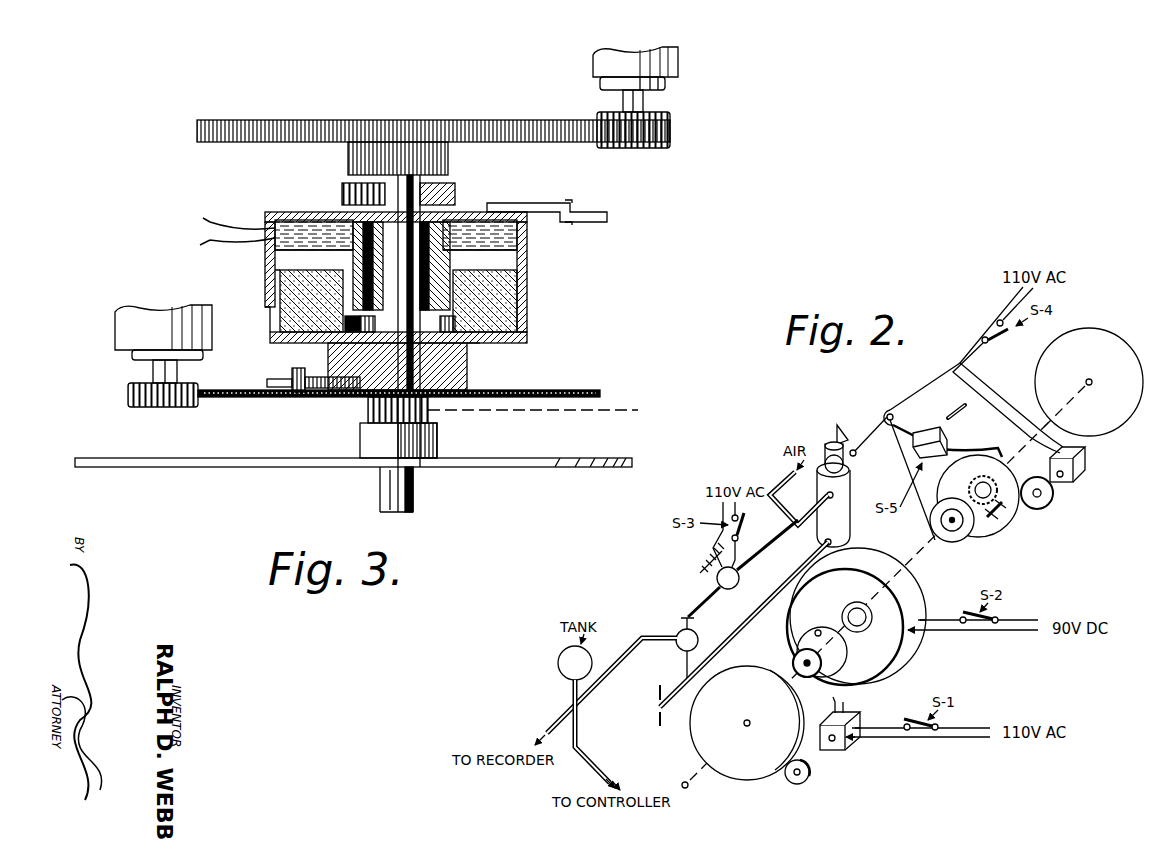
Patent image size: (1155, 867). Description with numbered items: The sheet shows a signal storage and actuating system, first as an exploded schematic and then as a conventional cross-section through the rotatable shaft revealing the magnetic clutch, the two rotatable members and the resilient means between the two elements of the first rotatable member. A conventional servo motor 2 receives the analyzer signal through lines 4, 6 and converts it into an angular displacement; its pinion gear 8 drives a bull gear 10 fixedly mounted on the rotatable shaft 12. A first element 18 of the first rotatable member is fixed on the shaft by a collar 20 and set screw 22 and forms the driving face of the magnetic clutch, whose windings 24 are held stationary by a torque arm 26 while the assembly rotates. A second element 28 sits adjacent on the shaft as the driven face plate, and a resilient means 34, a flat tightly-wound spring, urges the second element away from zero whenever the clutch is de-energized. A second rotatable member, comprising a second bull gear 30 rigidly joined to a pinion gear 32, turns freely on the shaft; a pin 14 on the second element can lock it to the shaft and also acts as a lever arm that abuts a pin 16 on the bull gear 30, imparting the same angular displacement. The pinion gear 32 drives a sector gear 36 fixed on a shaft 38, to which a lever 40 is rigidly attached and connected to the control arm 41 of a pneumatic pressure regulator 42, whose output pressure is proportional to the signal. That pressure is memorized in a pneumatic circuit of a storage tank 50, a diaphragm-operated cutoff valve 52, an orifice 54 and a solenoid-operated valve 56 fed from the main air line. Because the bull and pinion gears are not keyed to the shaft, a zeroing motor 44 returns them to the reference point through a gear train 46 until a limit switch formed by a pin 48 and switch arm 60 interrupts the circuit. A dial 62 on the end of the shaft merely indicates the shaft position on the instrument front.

In FIG. 3, the servo motor 2 is at (605, 60).
In FIG. 2, the servo motor 2 is at (838, 748).
In FIG. 2, the line 4 is at (833, 697).
In FIG. 2, the line 6 is at (847, 703).
In FIG. 3, the pinion gear 8 is at (612, 148).
In FIG. 2, the pinion gear 8 is at (805, 780).
In FIG. 3, the bull gear 10 is at (510, 128).
In FIG. 2, the bull gear 10 is at (757, 766).
In FIG. 3, the rotatable shaft 12 is at (393, 185).
In FIG. 2, the rotatable shaft 12 is at (684, 781).
In FIG. 3, the pin 14 is at (322, 375).
In FIG. 2, the pin 14 is at (1003, 512).
In FIG. 3, the pin 16 is at (292, 375).
In FIG. 2, the pin 16 is at (990, 518).
In FIG. 3, the first element 18 is at (520, 318).
In FIG. 2, the first element 18 is at (797, 663).
In FIG. 3, the collar 20 is at (452, 193).
In FIG. 3, the set screw 22 is at (342, 194).
In FIG. 3, the windings 24 is at (510, 243).
In FIG. 2, the windings 24 is at (913, 592).
In FIG. 3, the torque arm 26 is at (545, 205).
In FIG. 3, the second element 28 is at (447, 380).
In FIG. 2, the second element 28 is at (958, 536).
In FIG. 3, the second bull gear 30 is at (557, 388).
In FIG. 2, the second bull gear 30 is at (985, 530).
In FIG. 3, the pinion gear 32 is at (368, 410).
In FIG. 2, the pinion gear 32 is at (1002, 480).
In FIG. 3, the resilient means 34 is at (460, 340).
In FIG. 2, the resilient means 34 is at (847, 607).
In FIG. 3, the sector gear 36 is at (525, 413).
In FIG. 2, the sector gear 36 is at (993, 446).
In FIG. 2, the shaft 38 is at (865, 440).
In FIG. 2, the lever 40 is at (837, 426).
In FIG. 2, the control arm 41 is at (833, 450).
In FIG. 2, the pneumatic pressure regulator 42 is at (842, 503).
In FIG. 3, the zeroing motor 44 is at (130, 330).
In FIG. 2, the zeroing motor 44 is at (1075, 463).
In FIG. 3, the gear train 46 is at (128, 397).
In FIG. 2, the gear train 46 is at (1052, 500).
In FIG. 2, the pin 48 is at (956, 412).
In FIG. 2, the storage tank 50 is at (558, 668).
In FIG. 2, the cutoff valve 52 is at (677, 648).
In FIG. 2, the orifice 54 is at (657, 693).
In FIG. 2, the solenoid-operated valve 56 is at (735, 589).
In FIG. 2, the switch arm 60 is at (947, 435).
In FIG. 3, the dial 62 is at (237, 457).
In FIG. 2, the dial 62 is at (1050, 370).